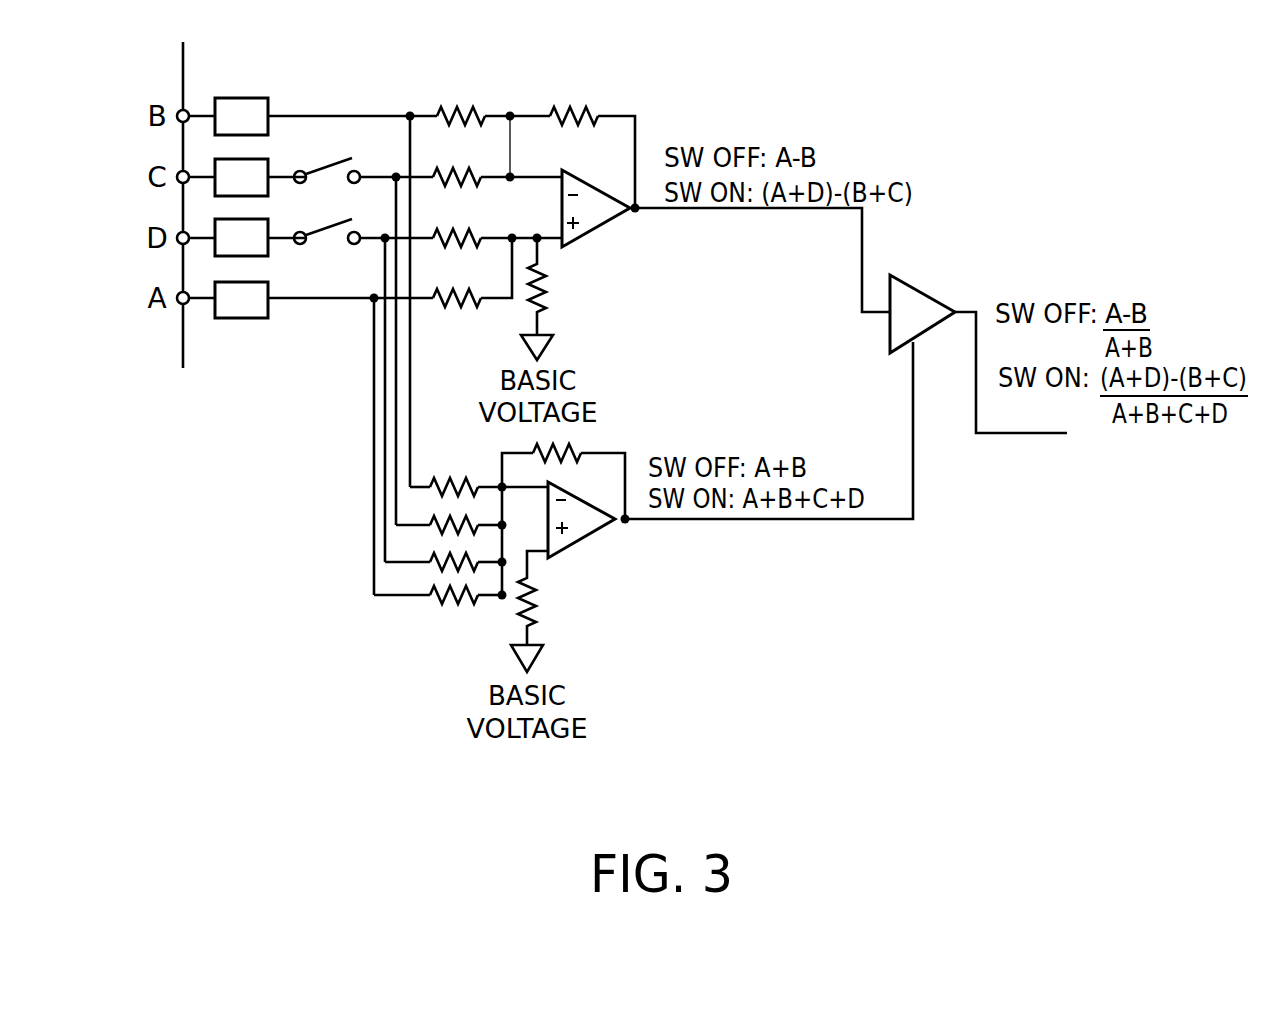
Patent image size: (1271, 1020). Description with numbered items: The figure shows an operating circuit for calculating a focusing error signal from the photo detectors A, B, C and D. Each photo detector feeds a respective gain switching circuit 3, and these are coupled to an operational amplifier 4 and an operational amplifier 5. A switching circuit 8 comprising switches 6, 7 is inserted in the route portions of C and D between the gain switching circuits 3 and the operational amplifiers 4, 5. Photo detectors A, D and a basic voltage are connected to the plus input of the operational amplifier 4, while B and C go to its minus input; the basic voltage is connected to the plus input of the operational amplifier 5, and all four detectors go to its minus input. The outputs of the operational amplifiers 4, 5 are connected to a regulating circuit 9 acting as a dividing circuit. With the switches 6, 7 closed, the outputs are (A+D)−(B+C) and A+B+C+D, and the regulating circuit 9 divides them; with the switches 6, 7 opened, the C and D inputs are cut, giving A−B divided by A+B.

The gain switching circuit 3 is at (240, 98).
The operational amplifier 4 is at (600, 226).
The operational amplifier 5 is at (589, 540).
The switch 6 is at (336, 156).
The switch 7 is at (336, 234).
The switching circuit 8 is at (307, 170).
The regulating circuit 9 is at (890, 340).